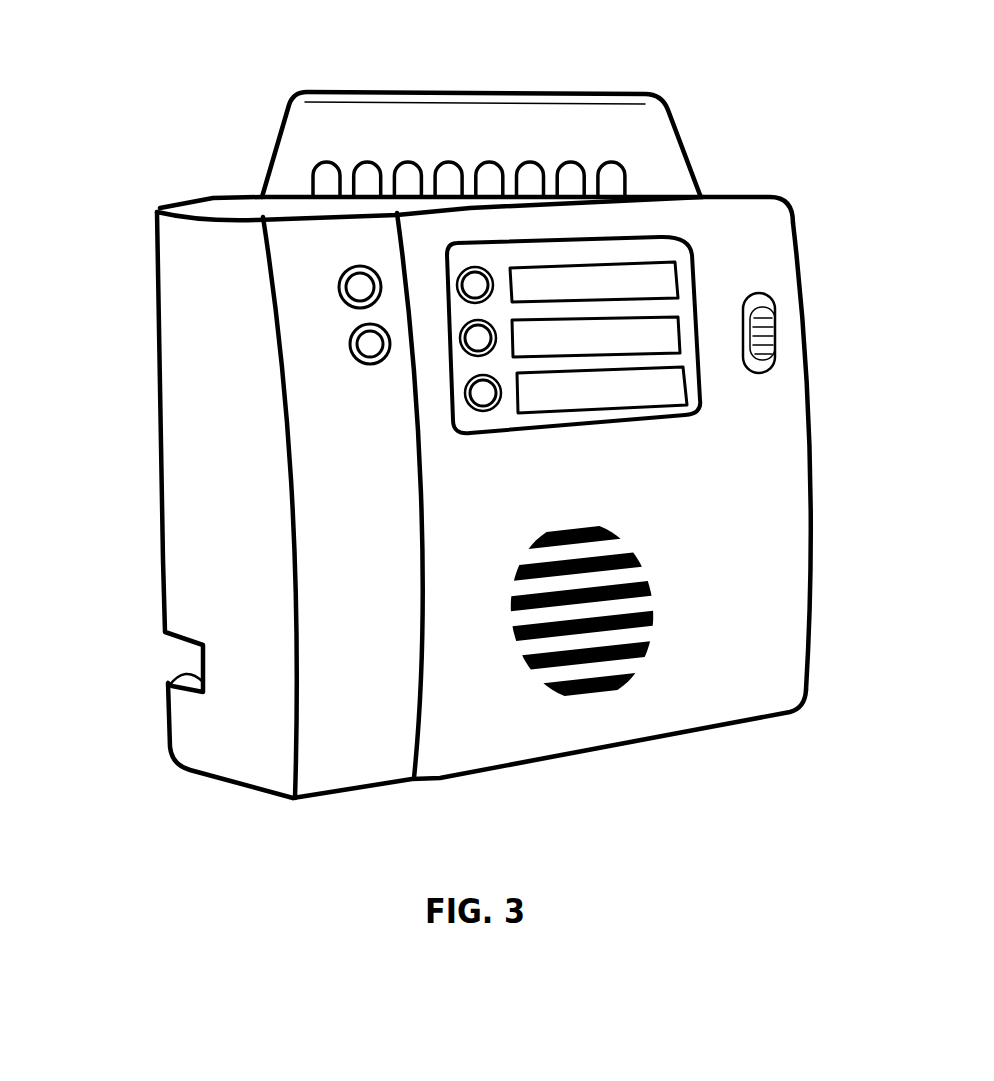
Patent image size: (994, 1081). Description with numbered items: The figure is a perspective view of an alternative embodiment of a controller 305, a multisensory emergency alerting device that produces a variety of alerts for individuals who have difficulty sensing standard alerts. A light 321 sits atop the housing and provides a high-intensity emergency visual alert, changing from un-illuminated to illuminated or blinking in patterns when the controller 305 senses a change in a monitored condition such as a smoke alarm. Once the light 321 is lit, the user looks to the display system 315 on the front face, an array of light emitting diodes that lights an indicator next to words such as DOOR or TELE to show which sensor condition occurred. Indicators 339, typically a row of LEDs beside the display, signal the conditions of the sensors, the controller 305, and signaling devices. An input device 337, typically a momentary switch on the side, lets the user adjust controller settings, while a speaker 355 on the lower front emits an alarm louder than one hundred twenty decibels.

The controller 305 is at (212, 128).
The light 321 is at (425, 92).
The indicators 339 is at (298, 276).
The display system 315 is at (670, 237).
The input device 337 is at (763, 293).
The speaker 355 is at (577, 722).